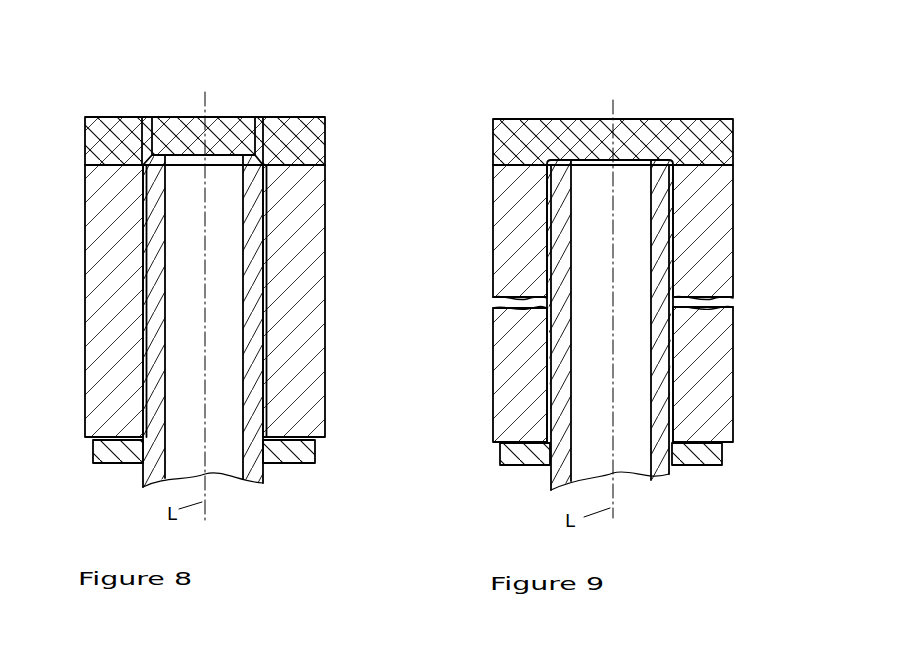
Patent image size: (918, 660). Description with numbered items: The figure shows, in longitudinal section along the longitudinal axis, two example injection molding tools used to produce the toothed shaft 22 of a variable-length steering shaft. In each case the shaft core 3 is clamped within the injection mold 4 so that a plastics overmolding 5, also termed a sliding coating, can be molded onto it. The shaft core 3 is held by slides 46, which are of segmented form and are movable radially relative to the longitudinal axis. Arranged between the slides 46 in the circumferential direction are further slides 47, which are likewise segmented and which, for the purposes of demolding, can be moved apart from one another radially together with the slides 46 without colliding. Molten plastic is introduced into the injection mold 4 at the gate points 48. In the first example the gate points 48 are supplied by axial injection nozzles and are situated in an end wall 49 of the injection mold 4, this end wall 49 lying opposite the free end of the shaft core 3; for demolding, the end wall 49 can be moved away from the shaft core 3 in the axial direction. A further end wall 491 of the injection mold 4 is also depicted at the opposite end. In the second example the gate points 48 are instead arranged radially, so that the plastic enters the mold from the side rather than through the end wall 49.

In FIG. 8, the shaft core 3 is at (163, 290).
In FIG. 9, the shaft core 3 is at (660, 285).
In FIG. 8, the injection mold 4 is at (368, 155).
In FIG. 9, the injection mold 4 is at (768, 155).
In FIG. 8, the plastics overmolding 5 is at (268, 233).
In FIG. 9, the plastics overmolding 5 is at (675, 365).
In FIG. 8, the toothed shaft 22 is at (142, 215).
In FIG. 8, the slide 46 is at (107, 338).
In FIG. 9, the slide 46 is at (523, 247).
In FIG. 8, the slide 47 is at (315, 313).
In FIG. 9, the slide 47 is at (713, 238).
In FIG. 8, the gate point 48 is at (150, 117).
In FIG. 9, the gate point 48 is at (513, 303).
In FIG. 8, the end wall 49 is at (292, 140).
In FIG. 9, the end wall 49 is at (652, 133).
In FIG. 8, the end wall 491 is at (95, 455).
In FIG. 9, the end wall 491 is at (513, 465).